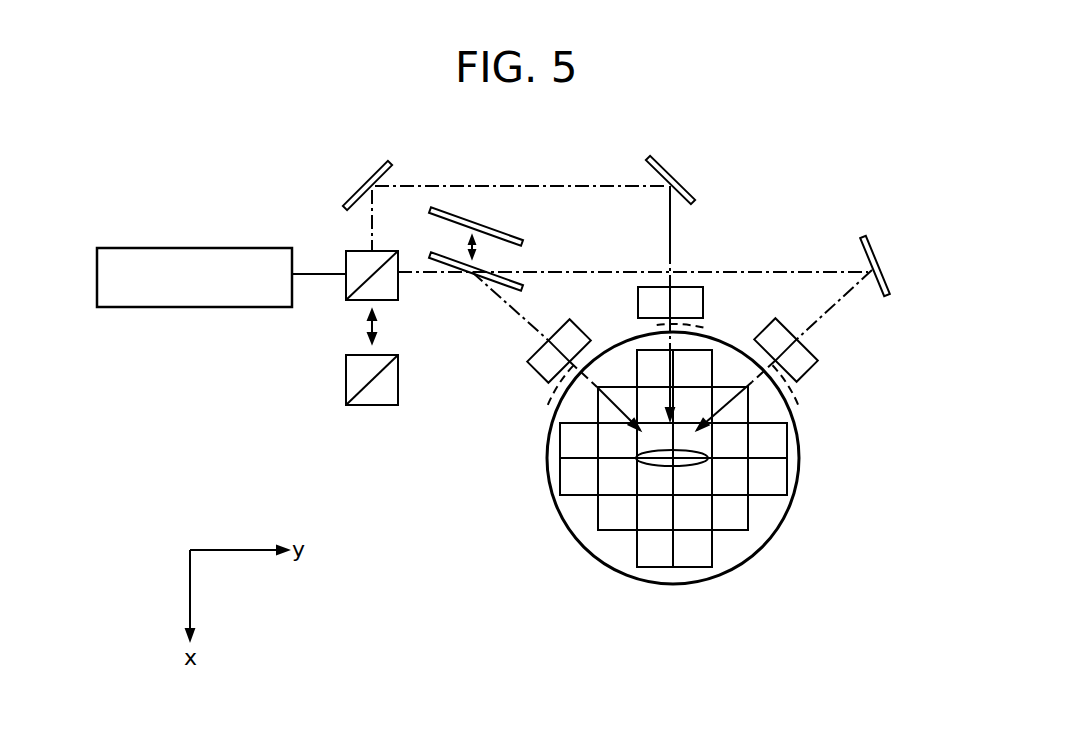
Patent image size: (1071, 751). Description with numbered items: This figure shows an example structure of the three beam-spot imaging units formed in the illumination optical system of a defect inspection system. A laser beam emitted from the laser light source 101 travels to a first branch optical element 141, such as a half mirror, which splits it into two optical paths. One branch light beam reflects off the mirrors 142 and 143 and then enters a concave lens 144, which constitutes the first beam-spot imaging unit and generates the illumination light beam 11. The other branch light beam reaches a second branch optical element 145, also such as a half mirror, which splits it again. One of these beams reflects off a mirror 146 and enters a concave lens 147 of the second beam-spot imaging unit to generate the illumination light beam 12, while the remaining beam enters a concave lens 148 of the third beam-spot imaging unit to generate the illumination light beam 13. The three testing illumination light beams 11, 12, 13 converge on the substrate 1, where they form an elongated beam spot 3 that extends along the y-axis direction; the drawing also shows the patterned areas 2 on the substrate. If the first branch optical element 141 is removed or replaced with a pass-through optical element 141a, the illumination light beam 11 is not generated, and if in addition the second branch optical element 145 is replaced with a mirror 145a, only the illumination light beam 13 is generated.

The laser light source 101 is at (187, 248).
The first branch optical element 141 is at (346, 252).
The pass-through optical element 141a is at (346, 382).
The mirror 142 is at (373, 182).
The mirror 143 is at (700, 160).
The concave lens 144 is at (703, 298).
The second branch optical element 145 is at (430, 258).
The mirror 145a is at (507, 232).
The mirror 146 is at (878, 268).
The concave lens 147 is at (818, 364).
The concave lens 148 is at (528, 363).
The substrate (sample) 1 is at (803, 470).
The shot areas 2 is at (752, 517).
The beam spot 3 is at (654, 470).
The illumination light beam 11 is at (705, 326).
The illumination light beam 12 is at (793, 386).
The illumination light beam 13 is at (562, 390).